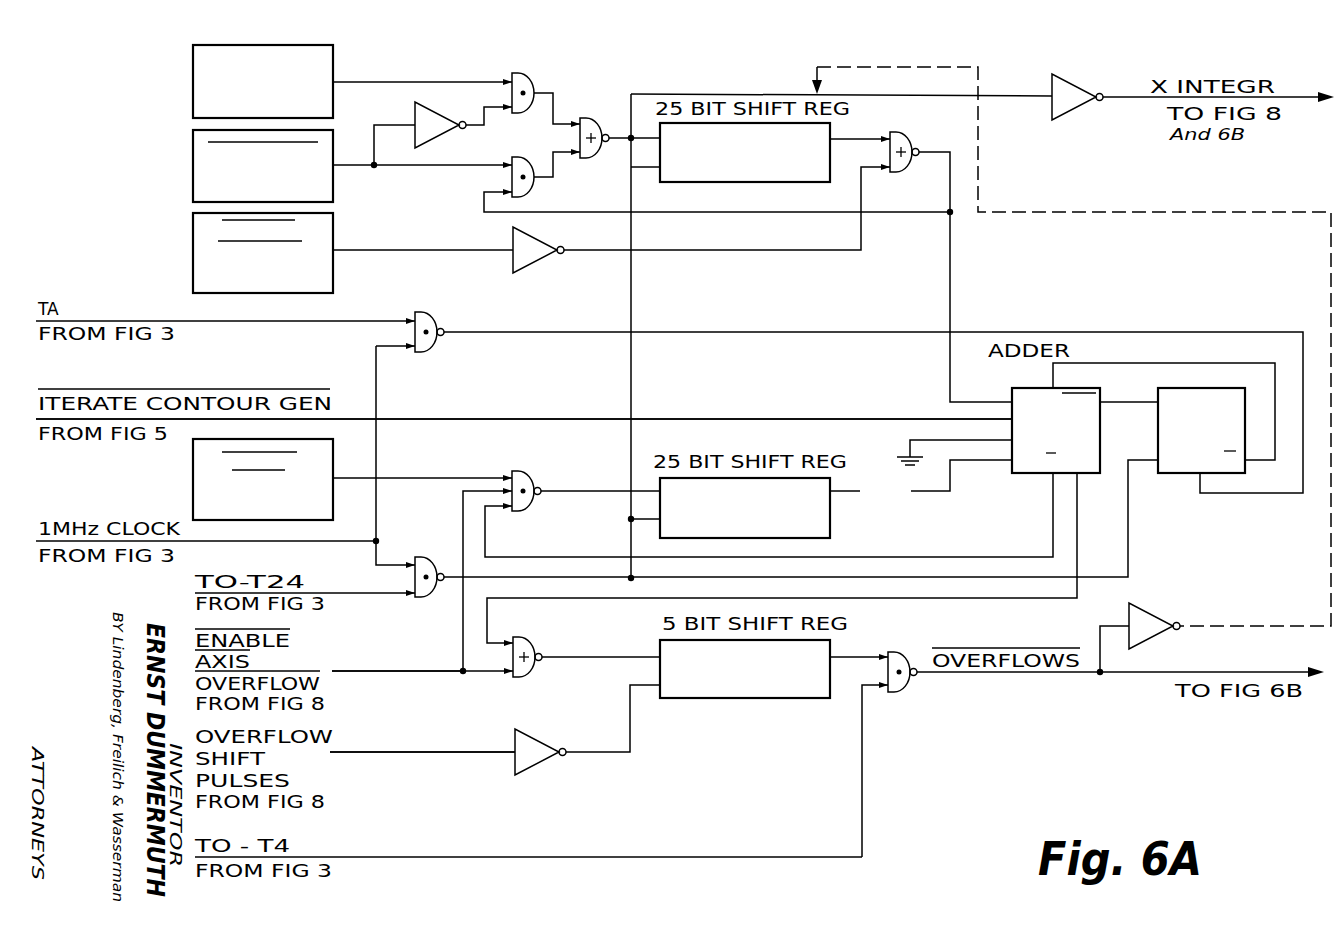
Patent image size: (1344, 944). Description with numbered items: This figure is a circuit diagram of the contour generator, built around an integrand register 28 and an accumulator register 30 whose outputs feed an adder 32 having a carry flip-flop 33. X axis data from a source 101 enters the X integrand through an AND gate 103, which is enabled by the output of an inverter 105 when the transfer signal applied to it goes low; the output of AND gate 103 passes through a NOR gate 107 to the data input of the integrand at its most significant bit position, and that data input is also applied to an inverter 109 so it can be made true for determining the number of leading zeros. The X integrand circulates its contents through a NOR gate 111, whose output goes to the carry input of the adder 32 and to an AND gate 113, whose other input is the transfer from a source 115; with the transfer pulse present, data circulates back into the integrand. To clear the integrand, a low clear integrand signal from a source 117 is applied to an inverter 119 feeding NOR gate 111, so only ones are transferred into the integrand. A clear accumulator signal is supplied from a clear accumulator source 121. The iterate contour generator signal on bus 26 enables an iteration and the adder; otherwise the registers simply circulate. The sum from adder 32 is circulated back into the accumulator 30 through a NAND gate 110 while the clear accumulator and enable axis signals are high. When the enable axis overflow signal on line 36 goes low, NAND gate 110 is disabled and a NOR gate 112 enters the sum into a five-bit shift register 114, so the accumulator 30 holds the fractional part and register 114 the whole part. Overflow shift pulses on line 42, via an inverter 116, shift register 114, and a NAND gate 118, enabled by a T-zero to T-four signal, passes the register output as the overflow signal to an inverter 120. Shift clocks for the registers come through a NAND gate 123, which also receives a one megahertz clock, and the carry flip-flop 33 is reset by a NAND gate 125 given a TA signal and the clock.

The X axis data source 101 is at (333, 50).
The AND gate 103 is at (520, 74).
The inverter 105 is at (425, 108).
The NOR gate 107 is at (588, 118).
The inverter 109 is at (1060, 78).
The NAND gate 110 is at (520, 472).
The NOR gate 111 is at (900, 133).
The NOR gate 112 is at (521, 638).
The AND gate 113 is at (534, 148).
The five-bit shift register 114 is at (820, 698).
The transfer source 115 is at (193, 160).
The inverter 116 is at (527, 733).
The clear integrand source 117 is at (193, 246).
The NAND gate 118 is at (896, 653).
The inverter 119 is at (525, 232).
The inverter 120 is at (1150, 613).
The clear accumulator source 121 is at (193, 487).
The NAND gate 123 is at (432, 547).
The NAND gate 125 is at (423, 313).
The bus 26 is at (538, 418).
The integrand register 28 is at (785, 183).
The accumulator register 30 is at (830, 535).
The adder 32 is at (1100, 392).
The carry flip-flop 33 is at (1185, 473).
The line 36 is at (375, 670).
The line 42 is at (398, 744).